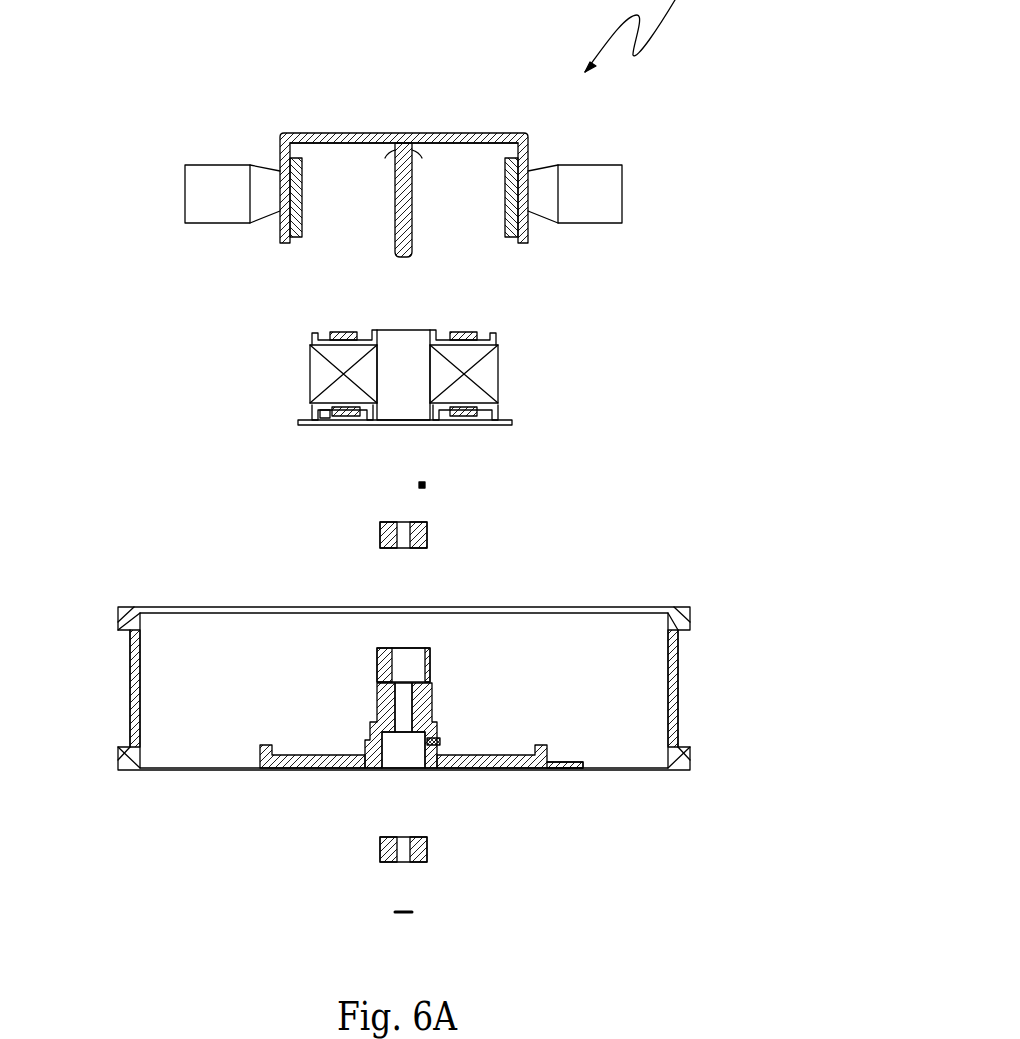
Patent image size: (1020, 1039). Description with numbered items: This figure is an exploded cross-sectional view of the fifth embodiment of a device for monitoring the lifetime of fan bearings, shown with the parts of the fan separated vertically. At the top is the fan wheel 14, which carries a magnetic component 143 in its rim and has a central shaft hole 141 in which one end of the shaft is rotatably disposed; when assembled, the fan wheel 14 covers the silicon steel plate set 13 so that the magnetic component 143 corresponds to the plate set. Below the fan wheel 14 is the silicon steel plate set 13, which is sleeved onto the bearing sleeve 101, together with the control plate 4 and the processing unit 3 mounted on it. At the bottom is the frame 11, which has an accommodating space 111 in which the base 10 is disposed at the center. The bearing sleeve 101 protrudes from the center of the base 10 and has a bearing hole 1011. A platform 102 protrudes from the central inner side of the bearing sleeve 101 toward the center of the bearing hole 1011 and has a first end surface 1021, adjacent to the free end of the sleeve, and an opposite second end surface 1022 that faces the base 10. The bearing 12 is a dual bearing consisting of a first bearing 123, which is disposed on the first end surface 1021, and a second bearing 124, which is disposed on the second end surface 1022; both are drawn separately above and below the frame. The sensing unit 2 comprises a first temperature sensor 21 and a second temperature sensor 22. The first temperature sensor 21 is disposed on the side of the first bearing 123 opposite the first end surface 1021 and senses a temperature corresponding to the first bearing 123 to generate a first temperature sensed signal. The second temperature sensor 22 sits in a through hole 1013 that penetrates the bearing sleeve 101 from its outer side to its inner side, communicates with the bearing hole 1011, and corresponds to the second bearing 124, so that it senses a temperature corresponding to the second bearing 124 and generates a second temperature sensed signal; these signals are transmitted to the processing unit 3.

The fan wheel 14 is at (283, 137).
The magnetic component 143 is at (298, 234).
The shaft hole 141 is at (412, 236).
The silicon steel plate set 13 is at (490, 370).
The control plate 4 is at (300, 424).
The processing unit 3 is at (323, 419).
The first temperature sensor 21 is at (428, 482).
The first bearing 123 is at (428, 535).
The bearing 12 is at (600, 494).
The frame 11 is at (680, 607).
The accommodating space 111 is at (215, 633).
The base 10 is at (353, 763).
The through hole 1013 is at (445, 762).
The platform 102 is at (418, 698).
The second end surface 1022 is at (393, 768).
The second temperature sensor 22 is at (437, 746).
The bearing sleeve 101 is at (432, 650).
The first end surface 1021 is at (390, 680).
The bearing hole 1011 is at (404, 650).
The second bearing 124 is at (380, 850).
The sensing unit 2 is at (552, 864).